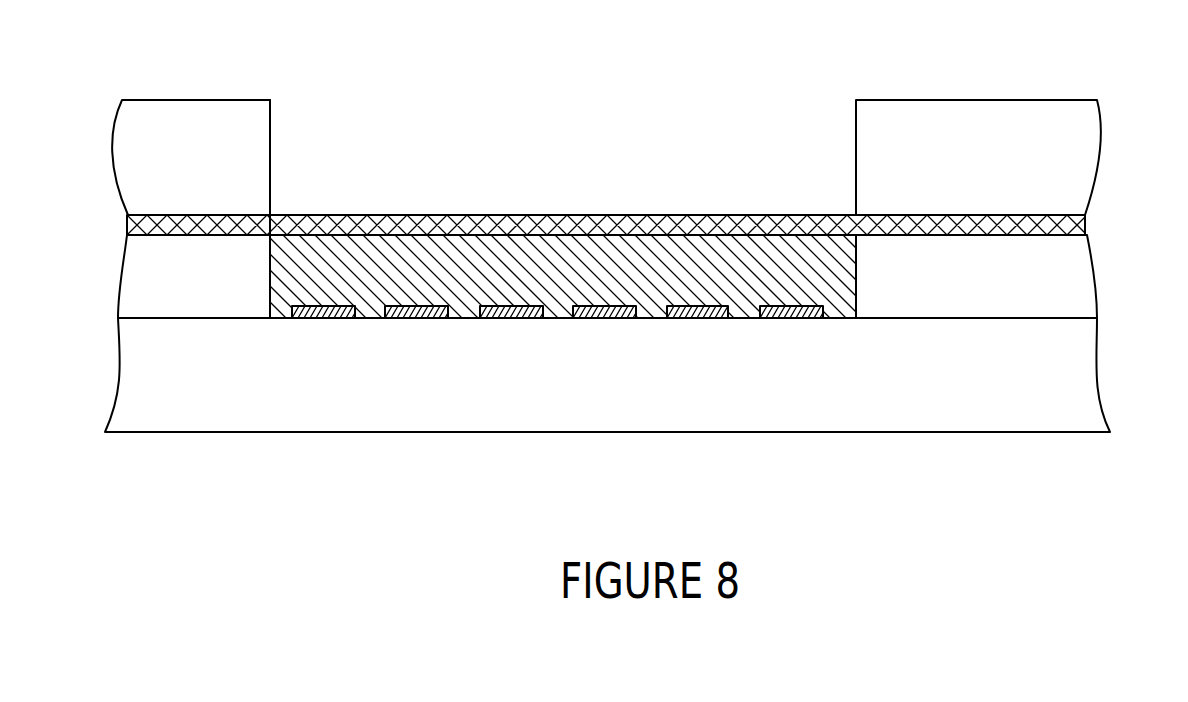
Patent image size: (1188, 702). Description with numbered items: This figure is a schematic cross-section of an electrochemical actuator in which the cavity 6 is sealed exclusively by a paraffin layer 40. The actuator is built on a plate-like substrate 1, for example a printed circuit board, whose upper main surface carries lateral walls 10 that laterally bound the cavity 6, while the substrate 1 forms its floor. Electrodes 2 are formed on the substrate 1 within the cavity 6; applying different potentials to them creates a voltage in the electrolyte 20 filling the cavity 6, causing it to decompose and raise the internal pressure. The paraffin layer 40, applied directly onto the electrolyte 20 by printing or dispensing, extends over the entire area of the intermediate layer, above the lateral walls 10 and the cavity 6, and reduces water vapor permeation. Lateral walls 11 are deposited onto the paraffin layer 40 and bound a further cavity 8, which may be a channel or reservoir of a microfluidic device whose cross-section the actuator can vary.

The substrate 1 is at (216, 385).
The electrodes 2 is at (500, 318).
The cavity 6 is at (856, 272).
The further cavity 8 is at (270, 128).
The lateral walls 10 is at (168, 273).
The lateral walls 11 is at (168, 145).
The electrolyte 20 is at (464, 268).
The paraffin layer 40 is at (718, 215).